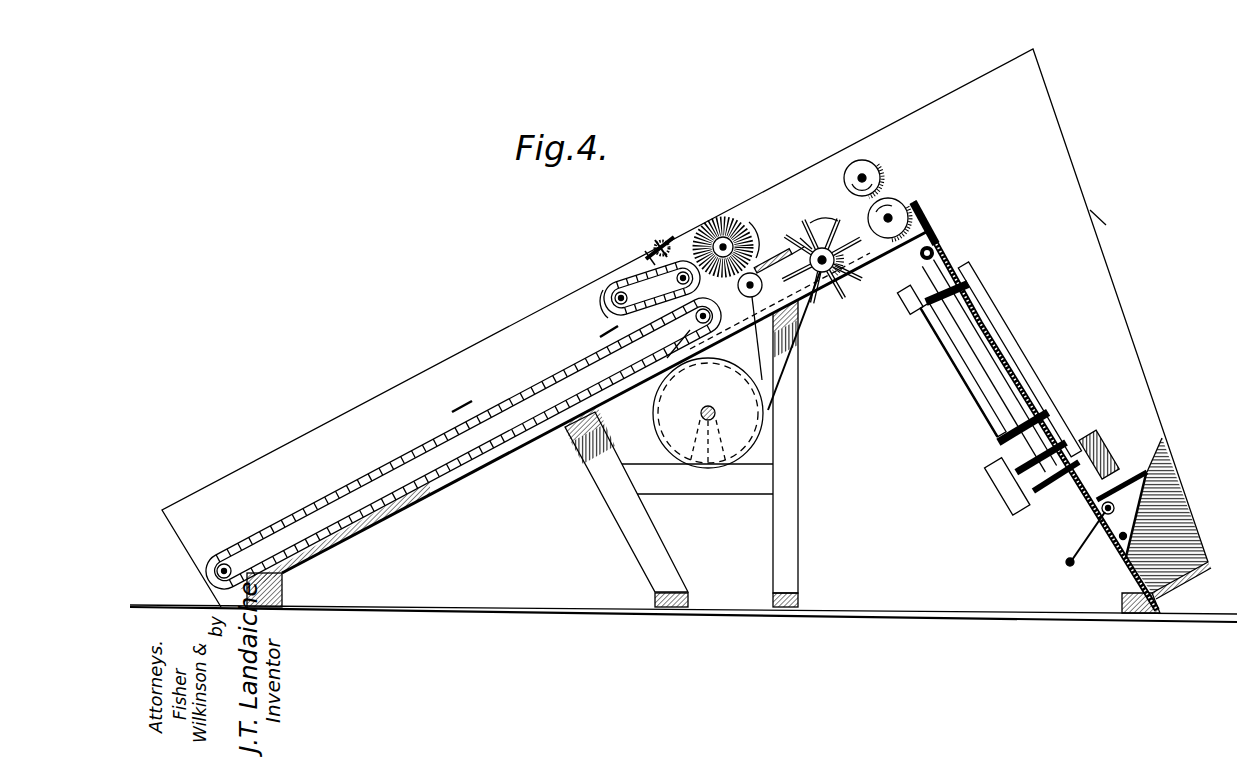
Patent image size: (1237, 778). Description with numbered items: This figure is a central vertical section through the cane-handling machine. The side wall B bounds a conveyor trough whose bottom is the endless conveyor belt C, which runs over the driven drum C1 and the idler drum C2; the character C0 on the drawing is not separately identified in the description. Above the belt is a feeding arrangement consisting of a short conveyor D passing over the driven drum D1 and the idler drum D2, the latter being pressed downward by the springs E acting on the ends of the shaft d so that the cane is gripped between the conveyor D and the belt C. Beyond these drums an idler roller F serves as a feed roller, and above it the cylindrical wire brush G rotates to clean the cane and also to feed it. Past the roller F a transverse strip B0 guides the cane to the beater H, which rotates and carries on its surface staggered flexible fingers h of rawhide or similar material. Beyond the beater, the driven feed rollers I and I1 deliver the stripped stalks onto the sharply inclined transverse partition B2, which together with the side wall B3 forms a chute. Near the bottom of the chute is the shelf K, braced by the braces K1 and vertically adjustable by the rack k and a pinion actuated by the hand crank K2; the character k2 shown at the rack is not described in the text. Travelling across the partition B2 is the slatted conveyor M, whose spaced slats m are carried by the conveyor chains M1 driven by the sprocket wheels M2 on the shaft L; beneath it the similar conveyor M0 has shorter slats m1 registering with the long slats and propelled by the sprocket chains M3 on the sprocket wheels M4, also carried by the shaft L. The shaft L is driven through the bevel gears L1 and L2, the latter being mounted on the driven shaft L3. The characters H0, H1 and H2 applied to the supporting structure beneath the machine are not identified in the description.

The side wall B is at (332, 426).
The transverse strip B0 is at (774, 258).
The transverse partition B2 is at (926, 212).
The side wall B3 is at (1094, 214).
The endless conveyor belt C is at (378, 470).
The lower belt pulley C0 is at (214, 572).
The driven drum C1 is at (704, 326).
The idler drum C2 is at (228, 550).
The short conveyor D is at (620, 280).
The driven drum D1 is at (608, 296).
The idler drum D2 is at (684, 266).
The shaft d is at (650, 292).
The springs E is at (656, 250).
The idler roller F is at (806, 334).
The brush G is at (723, 215).
The beater H is at (832, 283).
The base H0 is at (552, 612).
The support block H1 is at (286, 586).
The support leg H2 is at (636, 540).
The staggered fingers h is at (800, 238).
The feed roller I is at (860, 160).
The feed roller I1 is at (896, 204).
The shelf K is at (1152, 436).
The braces K1 is at (1136, 490).
The hand crank K2 is at (1064, 564).
The rack k is at (1120, 541).
The gate pivot k2 is at (1114, 507).
The shaft L is at (990, 372).
The bevel gear L1 is at (912, 292).
The bevel gear L2 is at (920, 258).
The driven shaft L3 is at (930, 240).
The slatted conveyor M is at (1040, 368).
The lower conveyor M0 is at (1026, 466).
The conveyor chains M1 is at (1000, 330).
The sprocket wheels M2 is at (940, 318).
The sprocket chains M3 is at (1024, 505).
The sprocket wheels M4 is at (1082, 438).
The slats m is at (968, 378).
The shorter slats m1 is at (1030, 484).